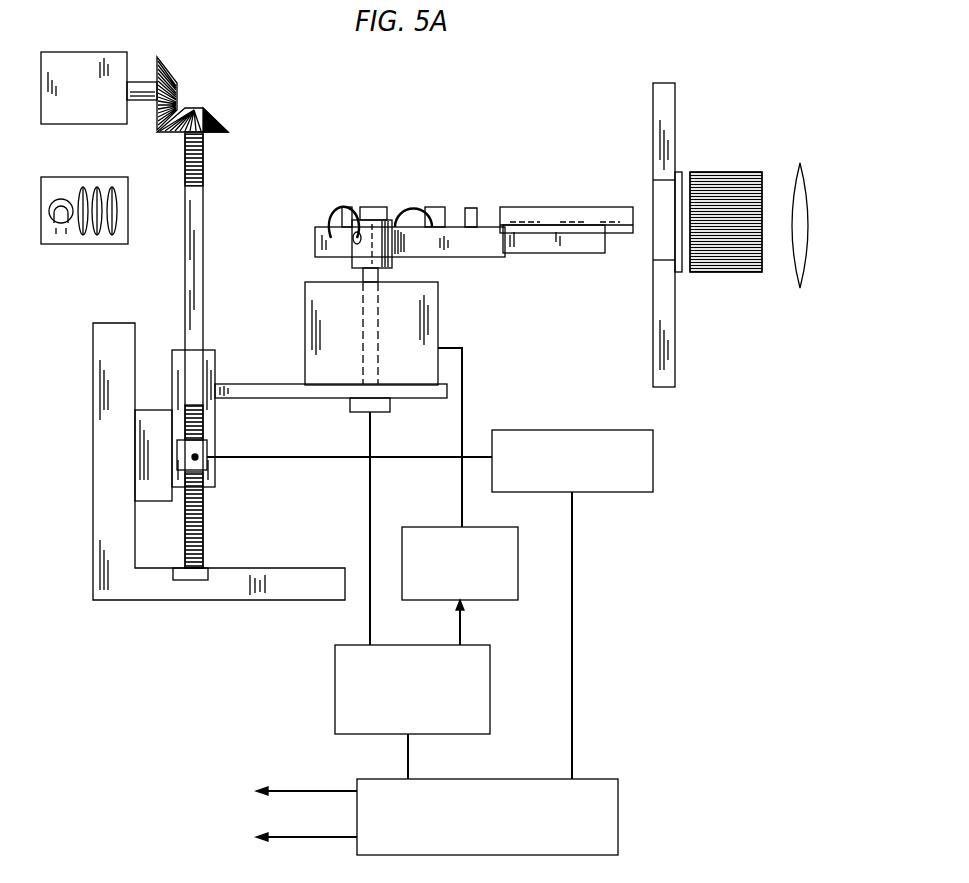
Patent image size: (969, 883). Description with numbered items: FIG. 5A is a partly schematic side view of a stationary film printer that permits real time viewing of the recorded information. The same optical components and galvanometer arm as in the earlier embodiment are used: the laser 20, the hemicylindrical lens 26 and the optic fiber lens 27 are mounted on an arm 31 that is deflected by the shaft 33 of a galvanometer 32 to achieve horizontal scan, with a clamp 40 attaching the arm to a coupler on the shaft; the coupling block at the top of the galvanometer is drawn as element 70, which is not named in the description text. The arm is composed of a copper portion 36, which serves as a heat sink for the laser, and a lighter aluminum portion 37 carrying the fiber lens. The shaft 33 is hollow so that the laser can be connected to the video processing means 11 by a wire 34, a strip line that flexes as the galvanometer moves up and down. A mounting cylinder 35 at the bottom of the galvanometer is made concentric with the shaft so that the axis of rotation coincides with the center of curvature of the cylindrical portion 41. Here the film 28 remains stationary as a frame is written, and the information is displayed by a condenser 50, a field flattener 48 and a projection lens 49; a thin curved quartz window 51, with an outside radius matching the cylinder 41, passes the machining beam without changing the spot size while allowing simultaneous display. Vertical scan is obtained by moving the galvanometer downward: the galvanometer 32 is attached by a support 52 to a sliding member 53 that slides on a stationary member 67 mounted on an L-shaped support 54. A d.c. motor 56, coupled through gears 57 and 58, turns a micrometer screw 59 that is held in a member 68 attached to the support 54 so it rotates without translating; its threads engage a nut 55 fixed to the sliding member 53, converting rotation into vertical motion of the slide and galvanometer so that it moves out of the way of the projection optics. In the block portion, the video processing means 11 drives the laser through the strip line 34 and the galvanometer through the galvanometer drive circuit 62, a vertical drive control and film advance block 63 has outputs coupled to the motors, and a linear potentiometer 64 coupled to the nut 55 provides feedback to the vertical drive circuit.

The video processing means 11 is at (337, 697).
The laser 20 is at (441, 214).
The hemicylindrical lens 26 is at (472, 212).
The optic fiber lens 27 is at (565, 210).
The film 28 is at (680, 176).
The arm 31 is at (301, 240).
The galvanometer 32 is at (425, 307).
The shaft 33 is at (362, 322).
The wire 34 is at (372, 441).
The cylinder 35 is at (358, 406).
The copper portion 36 is at (490, 247).
The aluminum portion 37 is at (585, 245).
The clamp 40 is at (366, 209).
The cylinder 41 is at (668, 367).
The field flattener 48 is at (727, 257).
The projection lens 49 is at (797, 188).
The condenser 50 is at (60, 183).
The curved quartz window 51 is at (658, 243).
The support 52 is at (263, 391).
The sliding member 53 is at (215, 360).
The L-shaped support 54 is at (100, 343).
The nut 55 is at (205, 452).
The d.c. motor 56 is at (77, 62).
The gear 57 is at (178, 82).
The gear 58 is at (222, 118).
The micrometer screw 59 is at (187, 290).
The galvanometer drive circuit 62 is at (418, 530).
The vertical drive control and film advance circuit 63 is at (618, 822).
The linear potentiometer 64 is at (552, 430).
The stationary member 67 is at (150, 456).
The member 68 is at (205, 573).
The galvanometer 70 is at (352, 258).